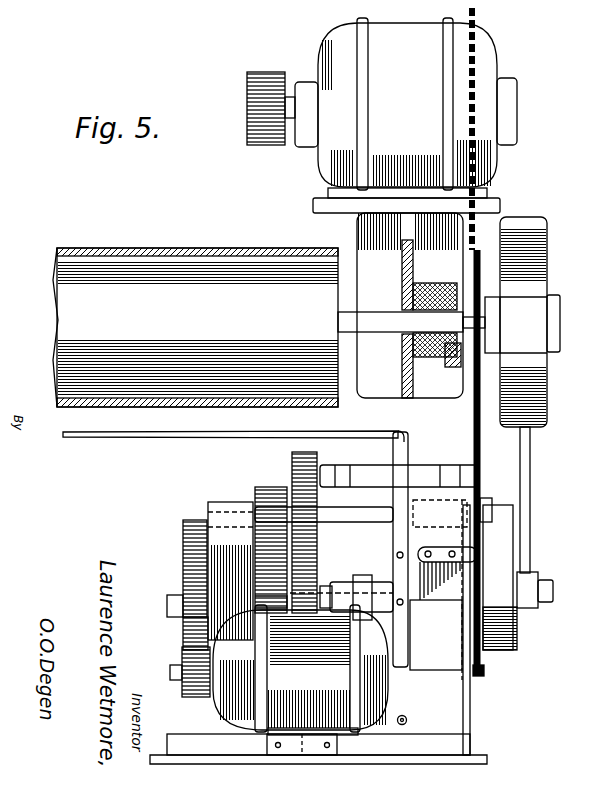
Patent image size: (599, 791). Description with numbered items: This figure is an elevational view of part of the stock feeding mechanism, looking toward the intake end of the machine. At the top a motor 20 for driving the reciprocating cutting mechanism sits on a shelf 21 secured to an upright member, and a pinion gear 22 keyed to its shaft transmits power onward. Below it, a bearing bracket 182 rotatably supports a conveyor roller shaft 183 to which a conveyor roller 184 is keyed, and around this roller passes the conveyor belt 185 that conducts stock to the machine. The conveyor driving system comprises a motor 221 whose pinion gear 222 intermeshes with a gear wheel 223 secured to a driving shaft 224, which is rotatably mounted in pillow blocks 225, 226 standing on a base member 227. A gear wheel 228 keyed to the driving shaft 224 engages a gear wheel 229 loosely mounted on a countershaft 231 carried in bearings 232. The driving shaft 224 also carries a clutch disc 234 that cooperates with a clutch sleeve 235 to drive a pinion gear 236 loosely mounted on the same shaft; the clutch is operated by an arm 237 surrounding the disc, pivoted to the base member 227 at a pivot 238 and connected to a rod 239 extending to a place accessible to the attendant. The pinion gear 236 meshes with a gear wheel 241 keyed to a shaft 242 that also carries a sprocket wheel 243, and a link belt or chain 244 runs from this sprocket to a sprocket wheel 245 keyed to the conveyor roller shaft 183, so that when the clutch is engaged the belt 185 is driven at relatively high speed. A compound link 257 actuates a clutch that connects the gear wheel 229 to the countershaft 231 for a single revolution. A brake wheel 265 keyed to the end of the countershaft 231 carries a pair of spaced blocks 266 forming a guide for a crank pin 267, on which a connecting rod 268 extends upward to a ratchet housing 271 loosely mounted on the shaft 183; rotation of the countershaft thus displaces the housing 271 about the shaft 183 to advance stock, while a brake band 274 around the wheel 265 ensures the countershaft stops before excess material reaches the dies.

The motor 20 is at (401, 129).
The shelf 21 is at (313, 208).
The pinion gear 22 is at (266, 72).
The bearing bracket 182 is at (433, 286).
The conveyor roller shaft 183 is at (372, 312).
The conveyor roller 184 is at (195, 327).
The conveyor belt 185 is at (210, 248).
The motor 221 is at (240, 713).
The pinion gear 222 is at (182, 681).
The gear wheel 223 is at (183, 545).
The driving shaft 224 is at (185, 621).
The pillow block 225 is at (213, 508).
The pillow block 226 is at (470, 706).
The base member 227 is at (465, 745).
The gear wheel 228 is at (263, 602).
The gear wheel 229 is at (255, 491).
The countershaft 231 is at (168, 597).
The bearing 232 is at (362, 577).
The clutch disc 234 is at (438, 590).
The clutch sleeve 235 is at (355, 594).
The pinion gear 236 is at (330, 585).
The arm 237 is at (405, 433).
The pivot 238 is at (407, 720).
The rod 239 is at (248, 431).
The gear wheel 241 is at (292, 458).
The shaft 242 is at (345, 507).
The sprocket wheel 243 is at (488, 505).
The link belt or chain 244 is at (474, 418).
The sprocket wheel 245 is at (456, 360).
The compound link 257 is at (432, 465).
The brake wheel 265 is at (472, 576).
The block 266 is at (517, 634).
The crank pin 267 is at (528, 578).
The connecting rod 268 is at (531, 479).
The ratchet housing 271 is at (530, 273).
The brake band 274 is at (484, 672).